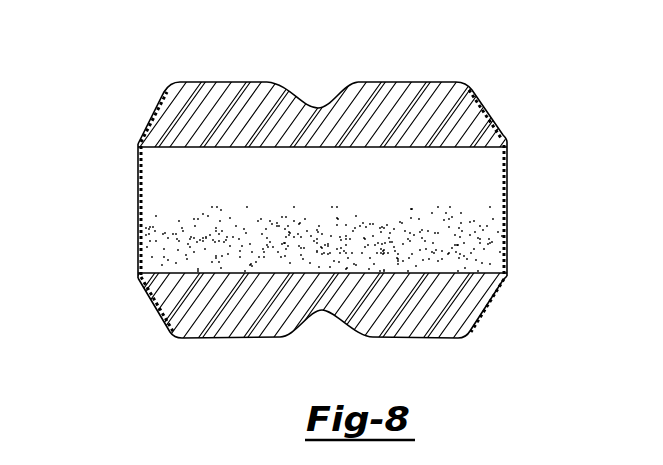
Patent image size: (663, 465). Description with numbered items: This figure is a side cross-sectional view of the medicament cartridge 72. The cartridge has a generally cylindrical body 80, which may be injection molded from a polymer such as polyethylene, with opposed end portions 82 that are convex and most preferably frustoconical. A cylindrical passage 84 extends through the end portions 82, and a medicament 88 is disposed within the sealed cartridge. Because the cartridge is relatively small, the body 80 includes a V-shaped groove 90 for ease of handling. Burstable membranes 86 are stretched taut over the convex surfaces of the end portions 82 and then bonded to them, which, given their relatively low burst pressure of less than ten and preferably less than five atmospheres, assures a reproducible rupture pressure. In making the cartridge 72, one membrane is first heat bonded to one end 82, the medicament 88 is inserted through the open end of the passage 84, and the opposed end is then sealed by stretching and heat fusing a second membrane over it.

The medicament cartridge 72 is at (331, 200).
The cylindrical body 80 is at (440, 103).
The end portions 82 is at (153, 112).
The cylindrical passage 84 is at (216, 146).
The burstable membranes 86 is at (137, 224).
The medicament 88 is at (335, 232).
The V-shaped groove 90 is at (320, 107).